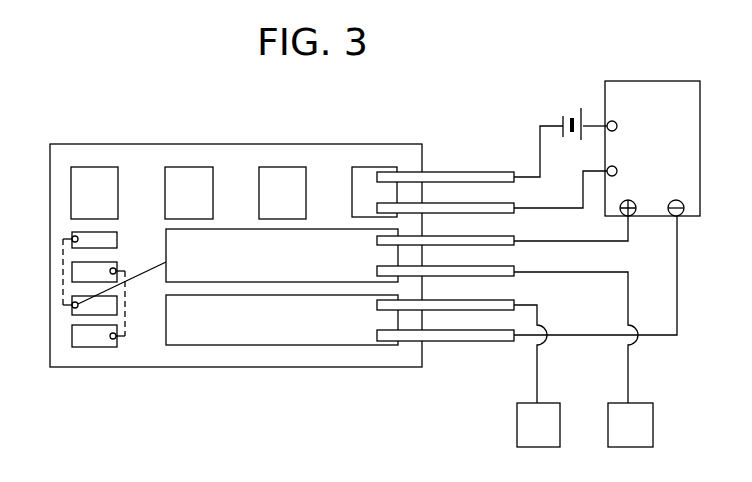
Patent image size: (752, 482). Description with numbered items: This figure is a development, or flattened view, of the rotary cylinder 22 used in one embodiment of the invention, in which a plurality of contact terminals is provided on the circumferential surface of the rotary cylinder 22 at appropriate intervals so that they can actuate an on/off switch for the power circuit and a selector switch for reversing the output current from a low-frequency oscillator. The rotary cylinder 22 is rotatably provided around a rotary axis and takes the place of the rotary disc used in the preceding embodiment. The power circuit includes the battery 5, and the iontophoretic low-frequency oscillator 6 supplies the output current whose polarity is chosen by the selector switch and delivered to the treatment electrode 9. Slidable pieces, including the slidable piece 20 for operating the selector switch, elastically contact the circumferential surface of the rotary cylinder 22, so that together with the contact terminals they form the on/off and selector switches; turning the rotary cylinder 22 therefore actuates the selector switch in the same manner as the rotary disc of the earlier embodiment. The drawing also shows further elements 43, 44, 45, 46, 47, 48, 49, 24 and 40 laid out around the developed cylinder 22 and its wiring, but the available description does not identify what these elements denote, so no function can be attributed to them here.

The rotary cylinder 22 is at (223, 158).
The circuit components 43 is at (177, 185).
The connector pin 44 is at (450, 172).
The connector pin 45 is at (480, 208).
The switch contacts 46 is at (90, 243).
The switch contacts 47 is at (80, 268).
The connector pin 48 is at (377, 240).
The connector pin 49 is at (377, 271).
The slidable piece for operating selector switch 20 is at (382, 302).
The output terminal 24 is at (446, 337).
The battery 5 is at (585, 110).
The iontophoretic low-frequency oscillator 6 is at (640, 107).
The load device 40 is at (537, 422).
The treatment electrode 9 is at (639, 432).